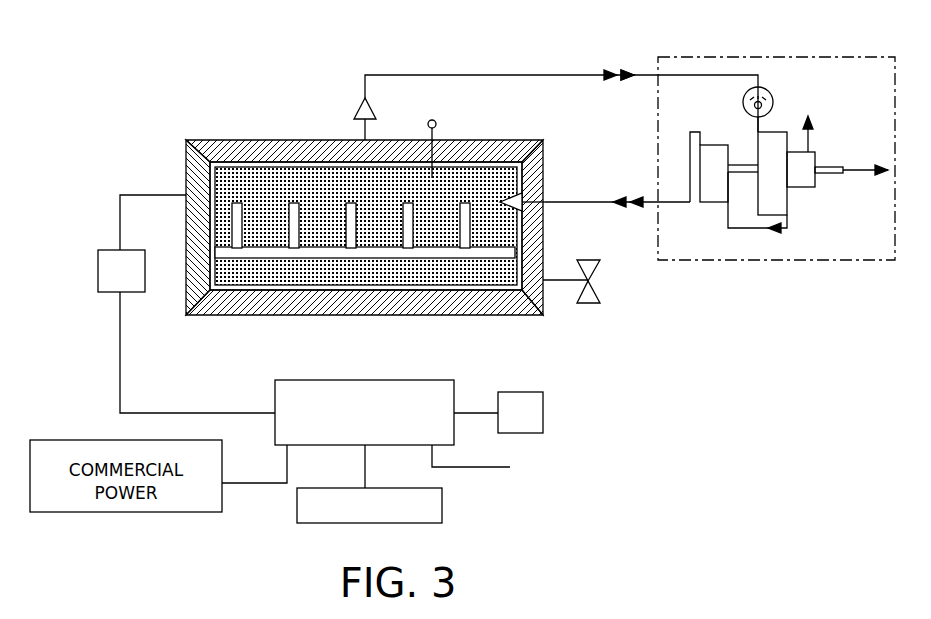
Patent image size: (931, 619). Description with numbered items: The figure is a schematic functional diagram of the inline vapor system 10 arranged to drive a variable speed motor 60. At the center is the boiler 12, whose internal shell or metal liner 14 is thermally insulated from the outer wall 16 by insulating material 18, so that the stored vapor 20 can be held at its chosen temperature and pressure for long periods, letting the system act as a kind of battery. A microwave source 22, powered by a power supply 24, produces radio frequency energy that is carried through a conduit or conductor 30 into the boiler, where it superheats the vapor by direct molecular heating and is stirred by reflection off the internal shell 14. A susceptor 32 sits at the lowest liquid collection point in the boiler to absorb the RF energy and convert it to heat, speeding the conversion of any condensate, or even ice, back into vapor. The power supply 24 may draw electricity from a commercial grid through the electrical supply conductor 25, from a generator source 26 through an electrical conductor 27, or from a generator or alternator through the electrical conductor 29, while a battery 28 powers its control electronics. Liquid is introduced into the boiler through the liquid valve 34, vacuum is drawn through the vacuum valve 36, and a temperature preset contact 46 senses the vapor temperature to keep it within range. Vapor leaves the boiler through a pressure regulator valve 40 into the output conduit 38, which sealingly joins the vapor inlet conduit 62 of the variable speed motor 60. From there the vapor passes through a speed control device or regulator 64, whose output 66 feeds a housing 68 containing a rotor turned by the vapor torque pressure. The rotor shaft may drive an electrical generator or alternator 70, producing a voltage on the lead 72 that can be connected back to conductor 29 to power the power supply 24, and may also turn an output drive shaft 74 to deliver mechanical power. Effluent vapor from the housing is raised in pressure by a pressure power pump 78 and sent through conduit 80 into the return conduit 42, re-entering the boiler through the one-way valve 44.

The inline vapor system 10 is at (382, 206).
The boiler 12 is at (383, 204).
The internal shell 14 is at (217, 165).
The outer wall 16 is at (530, 140).
The insulating material 18 is at (380, 140).
The vapor 20 is at (365, 285).
The microwave source 22 is at (108, 250).
The power supply 24 is at (275, 383).
The electrical supply conductor 25 is at (258, 483).
The generator source 26 is at (328, 487).
The electrical conductor 27 is at (365, 472).
The battery 28 is at (532, 392).
The electrical conductor 29 is at (485, 467).
The conduit or conductor 30 is at (167, 195).
The susceptor 32 is at (428, 254).
The liquid valve 34 is at (584, 260).
The vacuum valve 36 is at (592, 303).
The conduit 38 is at (582, 75).
The pressure regulator valve 40 is at (374, 105).
The conduit 42 is at (596, 202).
The one-way valve 44 is at (545, 164).
The temperature preset contact 46 is at (438, 121).
The variable speed motor 60 is at (776, 135).
The vapor inlet conduit 62 is at (624, 75).
The speed control device 64 is at (774, 100).
The output 66 is at (756, 120).
The housing 68 is at (786, 202).
The electrical generator or alternator 70 is at (812, 186).
The lead 72 is at (810, 131).
The output drive shaft 74 is at (833, 173).
The pressure power pump 78 is at (712, 145).
The conduit 80 is at (636, 206).